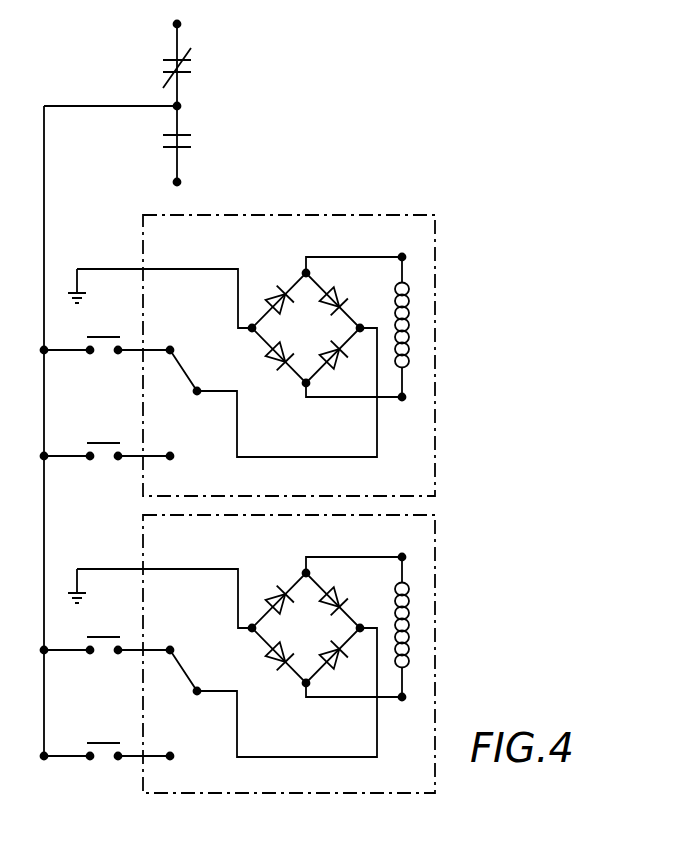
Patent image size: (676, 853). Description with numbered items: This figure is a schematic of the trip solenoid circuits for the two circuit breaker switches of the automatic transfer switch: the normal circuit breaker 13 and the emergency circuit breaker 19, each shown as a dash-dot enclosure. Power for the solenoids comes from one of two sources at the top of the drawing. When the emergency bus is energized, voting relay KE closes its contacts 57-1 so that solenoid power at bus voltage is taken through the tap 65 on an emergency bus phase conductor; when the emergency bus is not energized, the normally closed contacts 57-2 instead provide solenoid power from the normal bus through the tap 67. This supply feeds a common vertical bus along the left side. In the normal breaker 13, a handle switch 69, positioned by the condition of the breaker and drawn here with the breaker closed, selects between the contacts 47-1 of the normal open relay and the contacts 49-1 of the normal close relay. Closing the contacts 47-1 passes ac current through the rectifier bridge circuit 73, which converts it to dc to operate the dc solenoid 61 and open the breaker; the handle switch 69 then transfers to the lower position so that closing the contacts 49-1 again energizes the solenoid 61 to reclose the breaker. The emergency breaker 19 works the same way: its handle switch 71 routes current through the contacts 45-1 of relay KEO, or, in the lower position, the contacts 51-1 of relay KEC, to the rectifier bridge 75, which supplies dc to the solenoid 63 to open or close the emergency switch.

The normal circuit breaker 13 is at (393, 215).
The emergency circuit breaker 19 is at (435, 556).
The contacts of emergency switch open relay 45-1 is at (106, 668).
The contacts of normal circuit breaker open relay 47-1 is at (102, 343).
The contacts of normal circuit breaker close relay 49-1 is at (102, 449).
The contacts of emergency circuit breaker close relay 51-1 is at (107, 773).
The contacts of voting relay KE 57-1 is at (193, 138).
The normally closed contacts of voting relay KE 57-2 is at (195, 68).
The dc solenoid of normal circuit breaker 61 is at (411, 311).
The dc solenoid of emergency circuit breaker 63 is at (436, 627).
The emergency bus tap 65 is at (192, 182).
The normal bus tap 67 is at (177, 24).
The handle switch of normal circuit breaker 69 is at (185, 368).
The handle switch of emergency circuit breaker 71 is at (272, 684).
The rectifier bridge circuit 73 is at (295, 278).
The rectifier bridge 75 is at (326, 616).